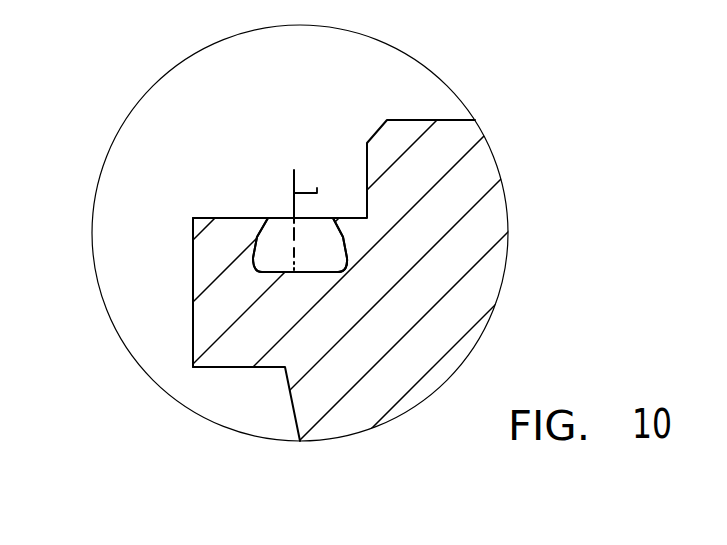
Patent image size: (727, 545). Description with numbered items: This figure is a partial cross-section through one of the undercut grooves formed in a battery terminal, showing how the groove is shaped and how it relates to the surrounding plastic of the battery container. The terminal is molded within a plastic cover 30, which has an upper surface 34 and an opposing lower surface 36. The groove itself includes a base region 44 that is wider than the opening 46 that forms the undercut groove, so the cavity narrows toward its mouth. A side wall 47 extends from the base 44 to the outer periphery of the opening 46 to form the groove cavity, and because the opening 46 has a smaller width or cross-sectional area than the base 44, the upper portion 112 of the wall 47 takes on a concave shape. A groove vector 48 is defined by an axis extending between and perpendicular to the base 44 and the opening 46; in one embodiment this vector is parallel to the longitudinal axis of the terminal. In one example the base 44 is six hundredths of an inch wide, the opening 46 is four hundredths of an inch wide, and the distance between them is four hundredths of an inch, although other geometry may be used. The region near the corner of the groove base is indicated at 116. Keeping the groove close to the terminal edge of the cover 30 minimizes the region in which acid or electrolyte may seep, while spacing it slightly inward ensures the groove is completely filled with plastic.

The plastic cover 30 is at (435, 120).
The upper surface 34 is at (215, 212).
The lower surface 36 is at (210, 370).
The base region 44 is at (289, 272).
The opening 46 is at (276, 212).
The side wall 47 is at (248, 258).
The groove vector 48 is at (325, 214).
The upper portion of wall 112 is at (342, 232).
The corner fillet 116 is at (346, 271).